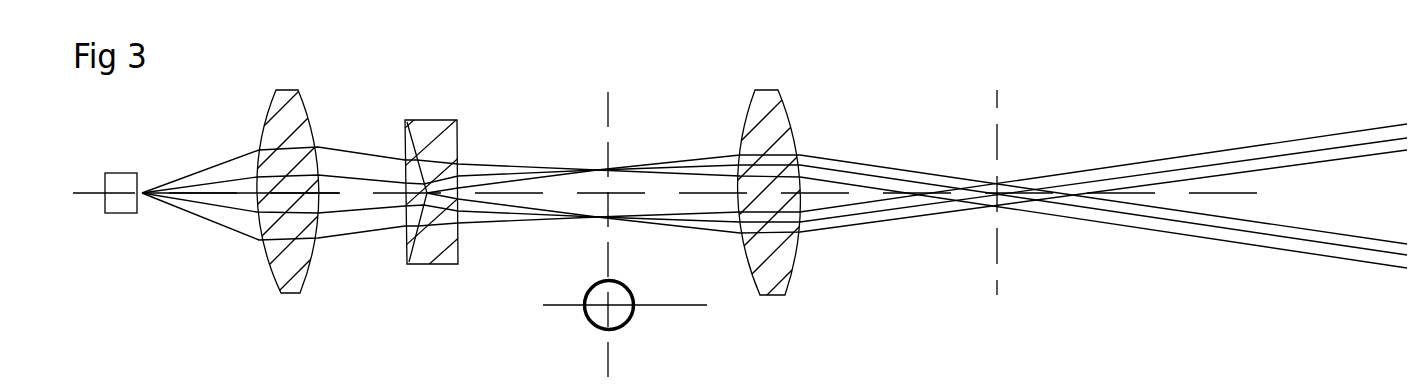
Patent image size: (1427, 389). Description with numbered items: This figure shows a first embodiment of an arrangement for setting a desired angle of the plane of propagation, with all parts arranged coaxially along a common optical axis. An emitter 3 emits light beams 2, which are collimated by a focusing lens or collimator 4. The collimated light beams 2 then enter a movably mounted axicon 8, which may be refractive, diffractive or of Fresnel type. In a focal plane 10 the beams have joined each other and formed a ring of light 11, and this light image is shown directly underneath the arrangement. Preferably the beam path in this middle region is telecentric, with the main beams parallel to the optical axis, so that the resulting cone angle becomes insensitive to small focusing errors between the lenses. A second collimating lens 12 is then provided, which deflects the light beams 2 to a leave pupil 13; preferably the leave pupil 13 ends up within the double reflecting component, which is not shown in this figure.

The light beams 2 is at (530, 165).
The emitter 3 is at (115, 172).
The focusing lens or collimator 4 is at (280, 88).
The axicon 8 is at (417, 120).
The focal plane 10 is at (605, 92).
The ring of light 11 is at (602, 282).
The second collimating lens 12 is at (768, 90).
The leave pupil 13 is at (990, 98).